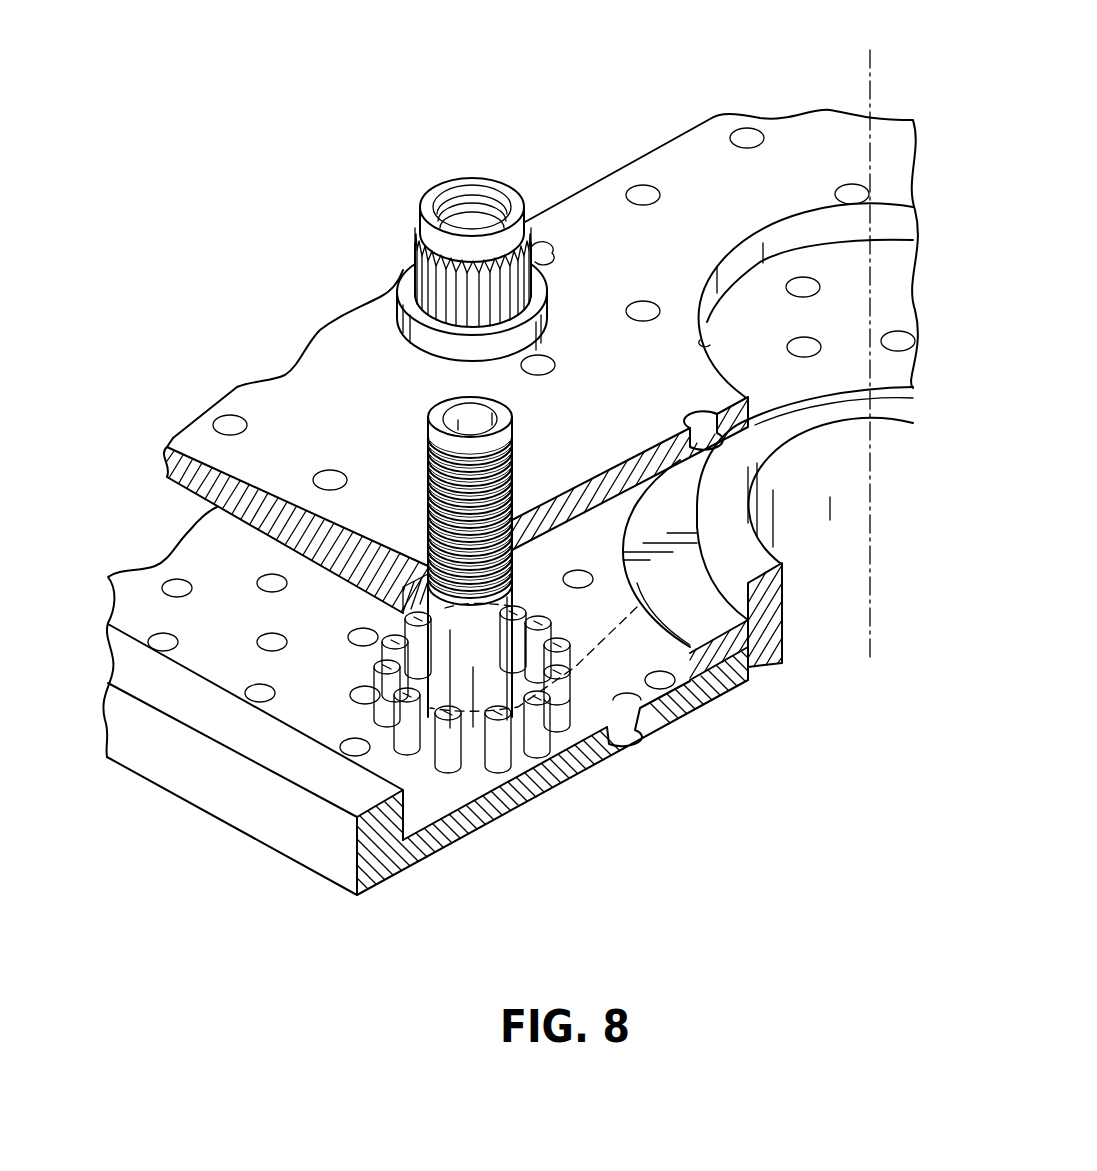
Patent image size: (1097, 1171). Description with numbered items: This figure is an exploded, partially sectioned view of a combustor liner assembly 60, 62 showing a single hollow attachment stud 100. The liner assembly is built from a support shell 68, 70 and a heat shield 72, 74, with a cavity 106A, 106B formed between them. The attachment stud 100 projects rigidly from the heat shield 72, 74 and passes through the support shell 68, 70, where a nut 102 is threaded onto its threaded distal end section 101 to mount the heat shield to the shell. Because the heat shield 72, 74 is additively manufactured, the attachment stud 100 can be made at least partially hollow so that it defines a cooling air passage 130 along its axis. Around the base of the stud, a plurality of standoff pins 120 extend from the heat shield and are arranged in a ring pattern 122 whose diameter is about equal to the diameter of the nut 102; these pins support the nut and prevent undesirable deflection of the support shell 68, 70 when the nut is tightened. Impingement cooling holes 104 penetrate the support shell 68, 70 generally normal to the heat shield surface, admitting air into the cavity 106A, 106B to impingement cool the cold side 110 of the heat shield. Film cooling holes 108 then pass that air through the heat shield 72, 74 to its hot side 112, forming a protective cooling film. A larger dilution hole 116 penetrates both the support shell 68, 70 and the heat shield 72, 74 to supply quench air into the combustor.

The combustor liner assembly 60 is at (765, 101).
The combustor liner assembly 62 is at (630, 473).
The support shell 68 is at (289, 363).
The support shell 70 is at (297, 532).
The heat shield 72 is at (732, 706).
The heat shield 74 is at (427, 771).
The attachment stud 100 is at (476, 540).
The threaded distal end section 101 is at (433, 463).
The nut 102 is at (489, 176).
The impingement cooling holes 104 is at (640, 195).
The cavity 106A is at (172, 521).
The cavity 106B is at (511, 637).
The film cooling holes 108 is at (335, 745).
The cold side 110 is at (627, 700).
The hot side 112 is at (572, 782).
The dilution holes 116 is at (885, 533).
The standoff pins 120 is at (452, 748).
The ring pattern 122 is at (645, 606).
The cooling air passage 130 is at (470, 420).